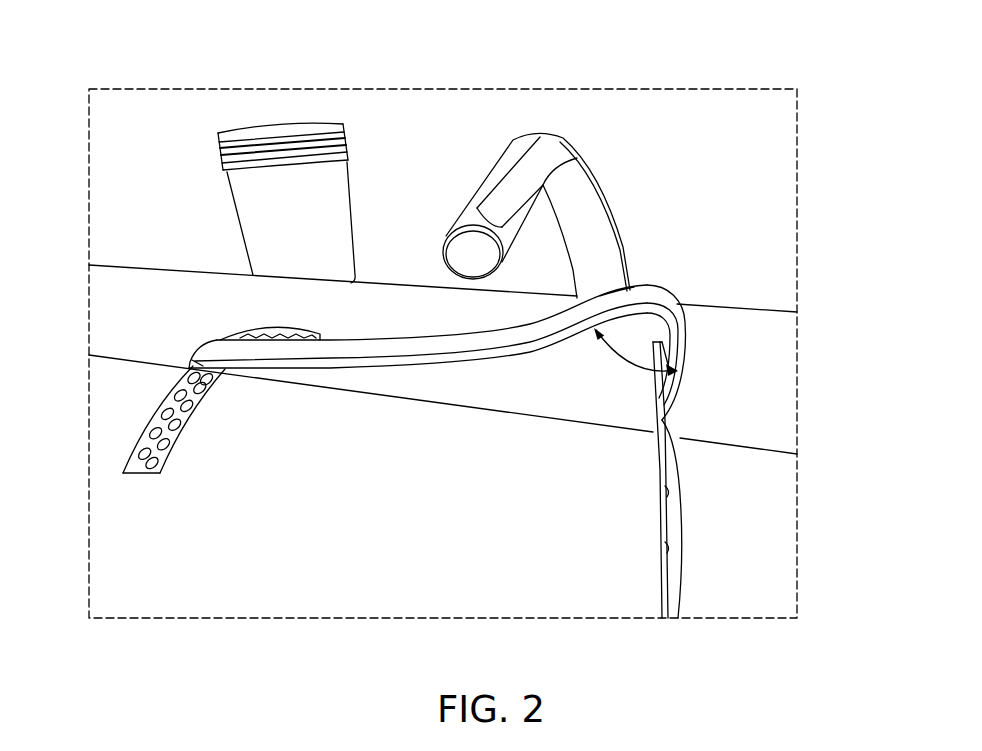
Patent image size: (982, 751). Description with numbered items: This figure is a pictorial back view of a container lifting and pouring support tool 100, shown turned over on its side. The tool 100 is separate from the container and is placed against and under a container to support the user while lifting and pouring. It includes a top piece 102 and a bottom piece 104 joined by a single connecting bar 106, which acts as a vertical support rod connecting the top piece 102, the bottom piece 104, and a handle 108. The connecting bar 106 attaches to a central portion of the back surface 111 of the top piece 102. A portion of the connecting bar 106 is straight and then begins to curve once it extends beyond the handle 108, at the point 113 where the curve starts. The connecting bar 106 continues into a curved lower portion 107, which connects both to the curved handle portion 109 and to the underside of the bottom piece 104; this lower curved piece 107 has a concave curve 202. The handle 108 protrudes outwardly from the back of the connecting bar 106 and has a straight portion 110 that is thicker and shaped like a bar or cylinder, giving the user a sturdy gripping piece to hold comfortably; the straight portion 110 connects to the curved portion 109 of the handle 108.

The container lifting and pouring support tool 100 is at (135, 72).
The top piece 102 is at (167, 397).
The bottom piece 104 is at (657, 430).
The connecting bar 106 is at (417, 368).
The curved lower portion 107 is at (667, 303).
The handle 108 is at (532, 143).
The curved handle portion 109 is at (592, 233).
The straight portion of the handle 110 is at (504, 190).
The back surface of the top piece 111 is at (193, 358).
The point where the curve of the connecting bar begins 113 is at (622, 300).
The concave curve 202 is at (624, 360).